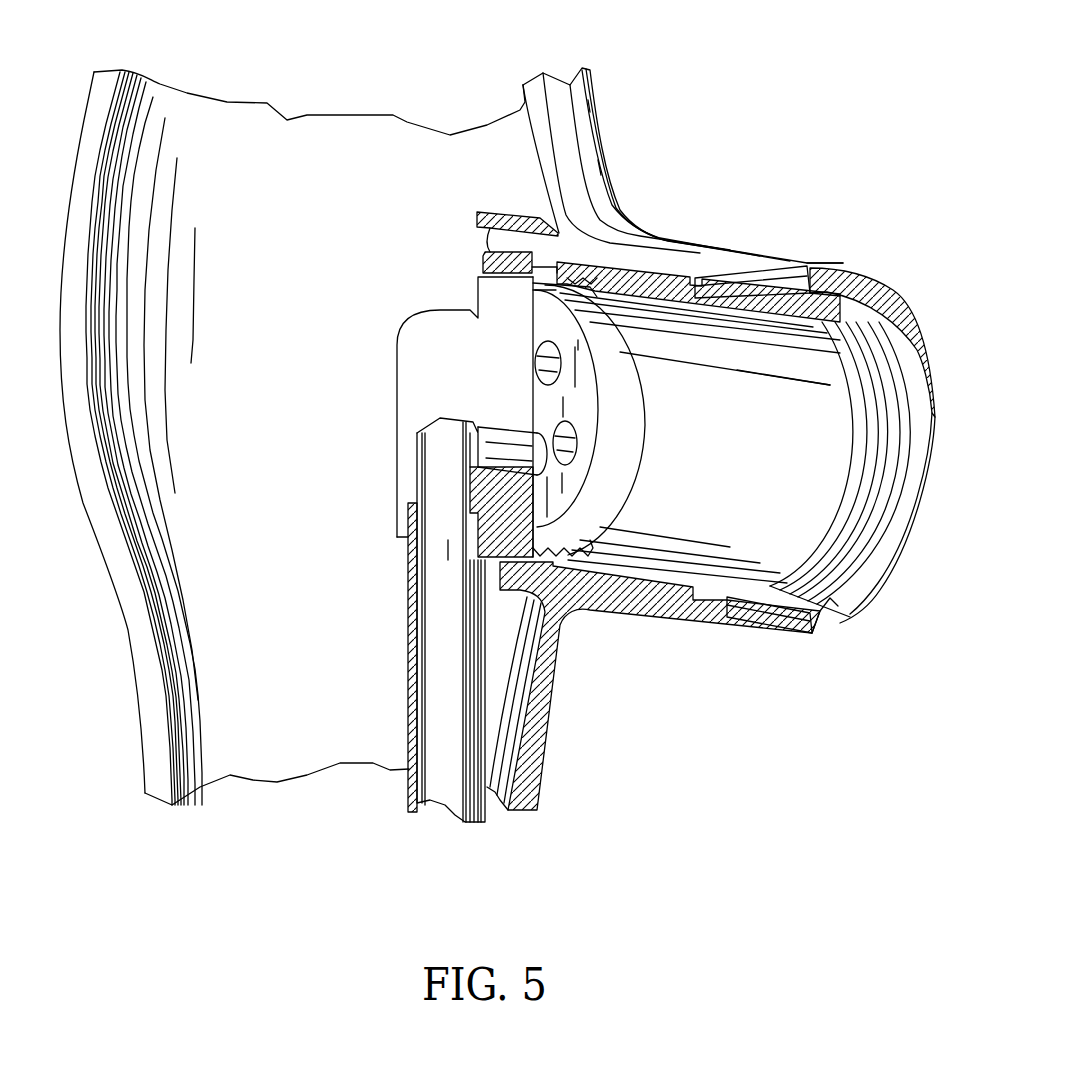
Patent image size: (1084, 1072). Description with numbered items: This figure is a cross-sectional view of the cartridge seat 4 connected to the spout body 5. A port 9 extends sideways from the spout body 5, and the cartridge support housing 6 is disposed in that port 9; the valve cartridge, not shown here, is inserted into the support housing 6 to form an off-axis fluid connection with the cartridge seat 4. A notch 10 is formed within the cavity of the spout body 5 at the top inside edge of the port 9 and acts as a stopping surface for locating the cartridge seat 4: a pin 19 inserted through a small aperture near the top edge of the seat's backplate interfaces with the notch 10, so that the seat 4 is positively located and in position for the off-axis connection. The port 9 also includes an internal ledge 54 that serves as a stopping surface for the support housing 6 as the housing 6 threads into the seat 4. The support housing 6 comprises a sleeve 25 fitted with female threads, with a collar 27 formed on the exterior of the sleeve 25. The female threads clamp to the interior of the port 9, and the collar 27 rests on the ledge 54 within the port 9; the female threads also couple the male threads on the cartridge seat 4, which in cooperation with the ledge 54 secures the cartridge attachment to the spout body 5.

The spout body 5 is at (243, 143).
The pin 19 is at (487, 250).
The notch 10 is at (547, 267).
The cartridge seat 4 is at (607, 380).
The internal ledge 54 is at (697, 277).
The collar 27 is at (707, 293).
The port 9 is at (837, 210).
The cartridge support housing 6 is at (810, 498).
The sleeve 25 is at (827, 610).